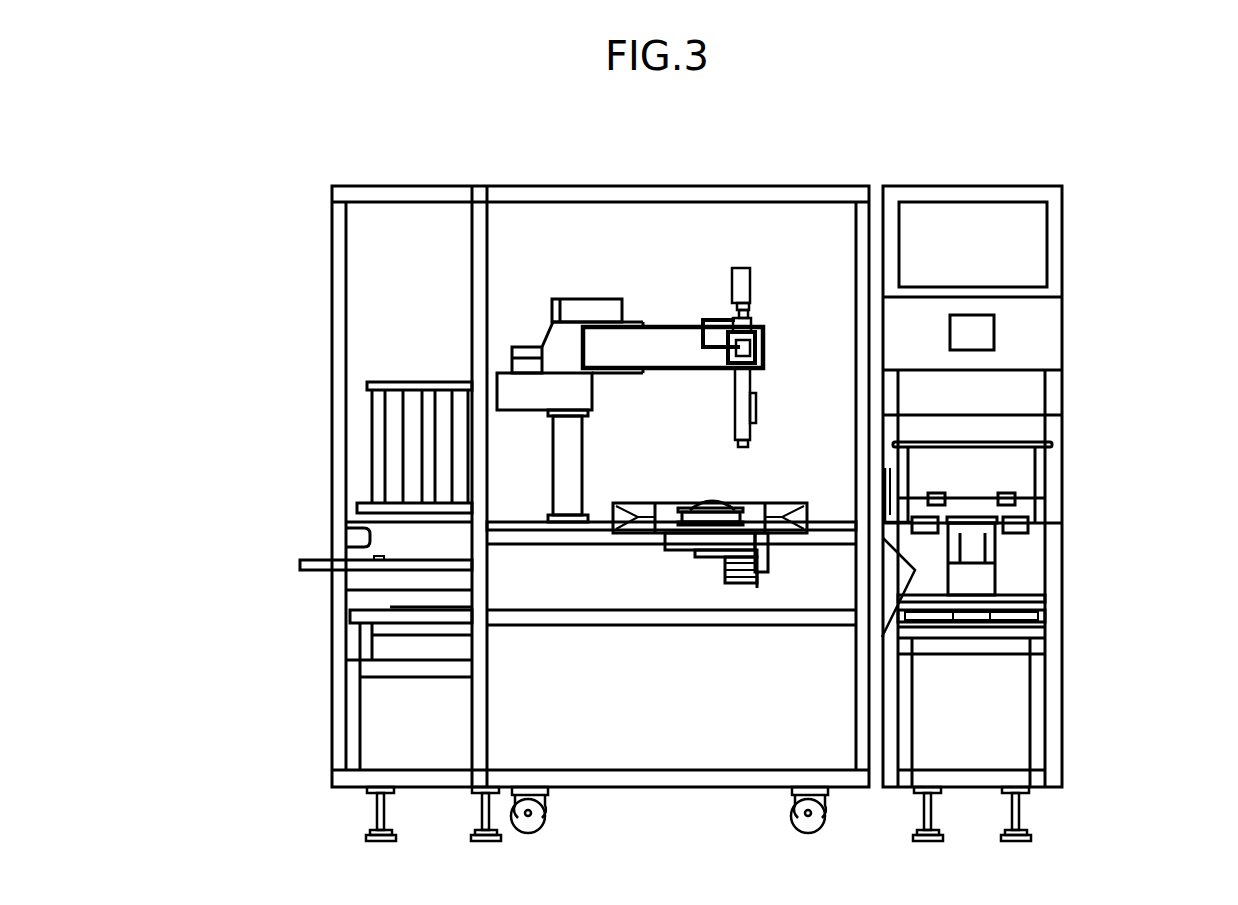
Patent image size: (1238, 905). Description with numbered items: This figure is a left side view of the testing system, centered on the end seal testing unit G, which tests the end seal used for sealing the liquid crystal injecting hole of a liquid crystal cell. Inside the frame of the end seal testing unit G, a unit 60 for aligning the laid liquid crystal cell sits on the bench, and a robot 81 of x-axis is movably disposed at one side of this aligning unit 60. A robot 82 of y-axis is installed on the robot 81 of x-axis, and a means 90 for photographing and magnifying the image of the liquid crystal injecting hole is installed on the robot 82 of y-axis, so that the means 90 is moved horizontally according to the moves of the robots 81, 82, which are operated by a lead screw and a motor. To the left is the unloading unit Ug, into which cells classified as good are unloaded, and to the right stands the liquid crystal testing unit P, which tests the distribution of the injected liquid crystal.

The end seal testing unit G is at (679, 745).
The unloading unit Ug is at (316, 448).
The robot of x-axis 81 is at (572, 458).
The robot of y-axis 82 is at (658, 342).
The means for photographing and magnifying 90 is at (744, 250).
The unit for aligning the laid liquid crystal cell 60 is at (645, 560).
The liquid crystal testing unit P is at (1085, 485).